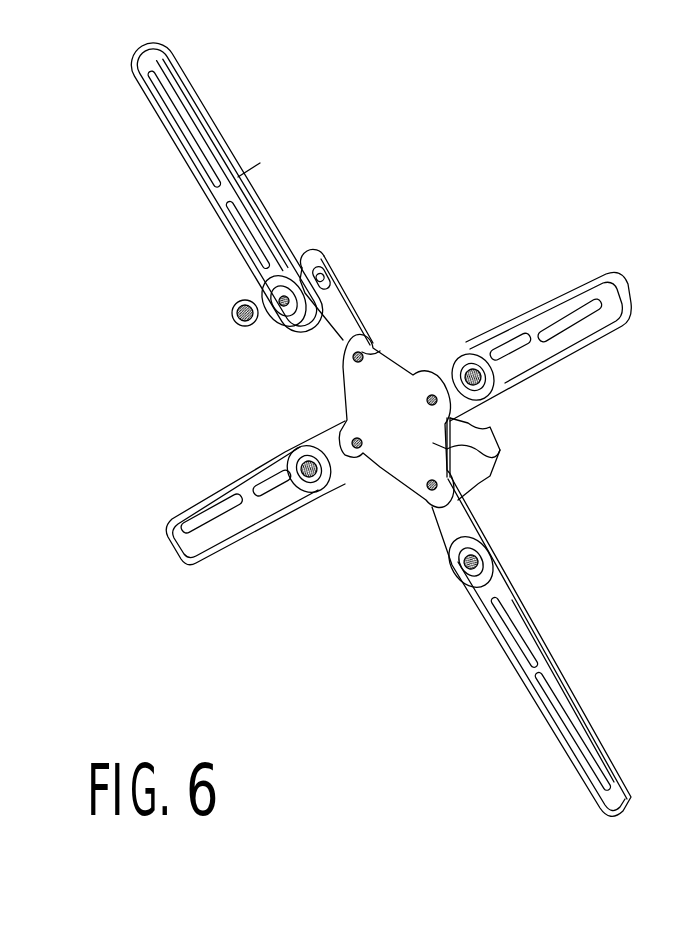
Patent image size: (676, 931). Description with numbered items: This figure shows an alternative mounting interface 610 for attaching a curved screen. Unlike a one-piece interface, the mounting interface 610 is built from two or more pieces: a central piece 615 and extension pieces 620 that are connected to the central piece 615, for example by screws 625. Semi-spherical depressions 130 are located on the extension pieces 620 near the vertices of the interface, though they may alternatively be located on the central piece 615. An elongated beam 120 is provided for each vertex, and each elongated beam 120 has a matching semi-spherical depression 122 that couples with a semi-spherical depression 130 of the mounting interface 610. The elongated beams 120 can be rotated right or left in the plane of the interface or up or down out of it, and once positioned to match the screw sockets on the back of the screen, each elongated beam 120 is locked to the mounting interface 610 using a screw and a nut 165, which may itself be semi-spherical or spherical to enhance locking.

The elongated beam 120 is at (253, 522).
The semi-spherical depression 122 is at (292, 328).
The semi-spherical depression 130 is at (330, 262).
The nut 165 is at (236, 316).
The mounting interface 610 is at (500, 450).
The central piece 615 is at (385, 375).
The extension piece 620 is at (342, 310).
The screw 625 is at (373, 352).